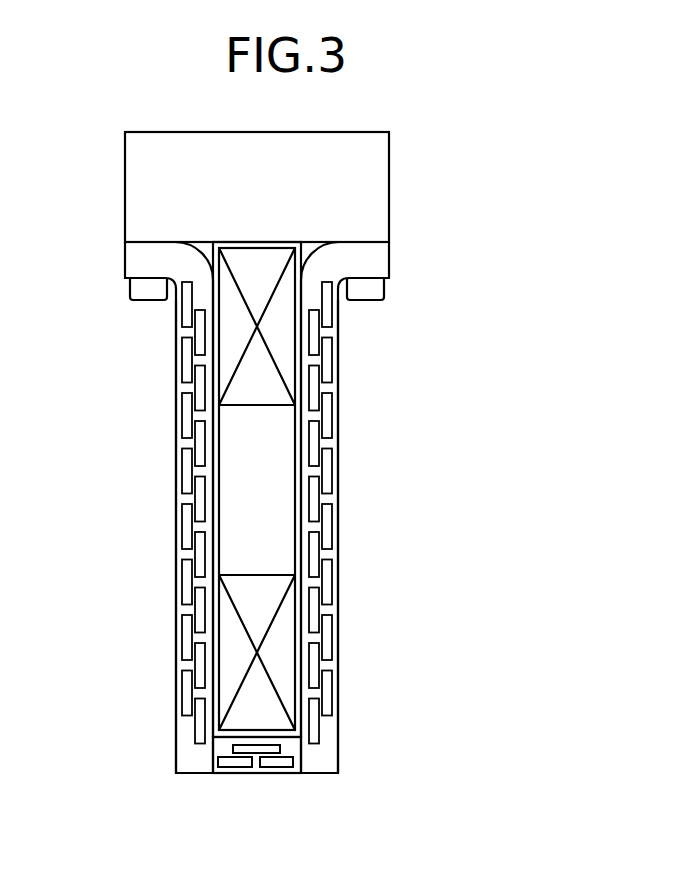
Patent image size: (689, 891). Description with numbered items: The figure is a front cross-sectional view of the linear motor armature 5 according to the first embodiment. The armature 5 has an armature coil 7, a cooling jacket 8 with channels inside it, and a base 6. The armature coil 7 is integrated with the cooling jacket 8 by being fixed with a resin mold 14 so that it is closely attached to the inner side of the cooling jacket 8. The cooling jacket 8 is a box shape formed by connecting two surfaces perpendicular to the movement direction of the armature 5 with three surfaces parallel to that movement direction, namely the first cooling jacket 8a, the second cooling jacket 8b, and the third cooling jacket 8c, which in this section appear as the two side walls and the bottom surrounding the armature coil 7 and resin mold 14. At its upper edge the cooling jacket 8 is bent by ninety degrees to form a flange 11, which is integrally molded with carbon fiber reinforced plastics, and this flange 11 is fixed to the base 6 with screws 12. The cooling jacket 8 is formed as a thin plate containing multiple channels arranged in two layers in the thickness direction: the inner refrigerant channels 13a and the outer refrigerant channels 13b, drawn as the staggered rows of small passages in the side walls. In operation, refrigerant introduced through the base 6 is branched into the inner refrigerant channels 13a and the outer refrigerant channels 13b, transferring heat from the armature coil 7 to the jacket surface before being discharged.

The armature 5 is at (347, 602).
The base 6 is at (142, 192).
The armature coil 7 is at (285, 662).
The cooling jacket 8 is at (187, 797).
The first cooling jacket 8a is at (325, 755).
The second cooling jacket 8b is at (218, 752).
The third cooling jacket 8c is at (197, 756).
The flange 11 is at (367, 260).
The screws 12 is at (366, 289).
The inner refrigerant channels 13a is at (312, 390).
The outer refrigerant channels 13b is at (325, 467).
The resin mold 14 is at (285, 532).